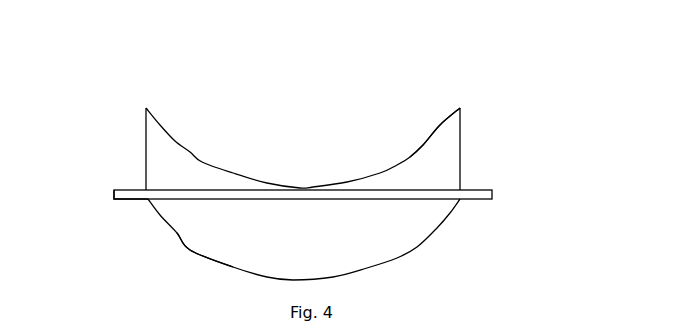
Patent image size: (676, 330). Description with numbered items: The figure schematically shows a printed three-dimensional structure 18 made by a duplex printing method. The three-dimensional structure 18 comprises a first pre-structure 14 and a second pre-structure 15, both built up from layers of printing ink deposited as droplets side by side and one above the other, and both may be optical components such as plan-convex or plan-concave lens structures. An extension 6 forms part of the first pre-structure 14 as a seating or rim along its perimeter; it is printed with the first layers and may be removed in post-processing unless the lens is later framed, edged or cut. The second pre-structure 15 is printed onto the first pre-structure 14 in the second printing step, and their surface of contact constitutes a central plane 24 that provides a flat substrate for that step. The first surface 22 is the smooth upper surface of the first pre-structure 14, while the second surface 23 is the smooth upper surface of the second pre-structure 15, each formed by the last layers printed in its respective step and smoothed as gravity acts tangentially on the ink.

The three-dimensional structure 18 is at (307, 77).
The extension 6 is at (492, 193).
The second surface 23 is at (202, 162).
The second pre-structure 15 is at (422, 163).
The central plane 24 is at (148, 198).
The first pre-structure 14 is at (205, 230).
The first surface 22 is at (188, 250).